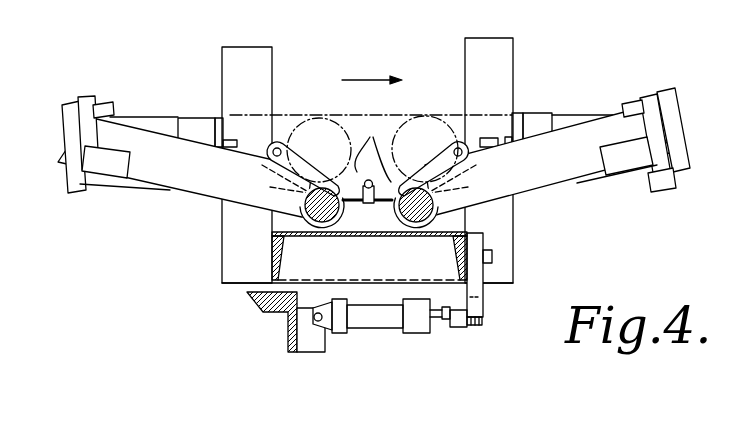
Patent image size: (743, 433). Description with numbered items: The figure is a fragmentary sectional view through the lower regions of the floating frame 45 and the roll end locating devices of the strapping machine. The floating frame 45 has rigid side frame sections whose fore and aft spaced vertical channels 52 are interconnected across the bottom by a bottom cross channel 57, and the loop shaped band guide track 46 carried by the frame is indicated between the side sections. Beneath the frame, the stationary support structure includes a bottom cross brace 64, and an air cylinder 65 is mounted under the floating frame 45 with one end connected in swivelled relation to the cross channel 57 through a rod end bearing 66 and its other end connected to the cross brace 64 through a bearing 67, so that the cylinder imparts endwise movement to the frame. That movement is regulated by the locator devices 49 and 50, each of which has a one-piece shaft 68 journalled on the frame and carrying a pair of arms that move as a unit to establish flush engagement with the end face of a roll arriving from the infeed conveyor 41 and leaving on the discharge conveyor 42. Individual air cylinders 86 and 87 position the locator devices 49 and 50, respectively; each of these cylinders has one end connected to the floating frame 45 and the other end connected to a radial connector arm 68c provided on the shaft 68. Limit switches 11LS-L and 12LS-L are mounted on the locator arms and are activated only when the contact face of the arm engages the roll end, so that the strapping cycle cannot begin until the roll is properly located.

The infeed conveyor 41 is at (286, 120).
The discharge conveyor 42 is at (453, 118).
The floating frame 45 is at (517, 235).
The band guide track 46 is at (370, 202).
The upstream locator device 49 is at (542, 192).
The downstream locator device 50 is at (206, 196).
The vertical channels 52 is at (225, 56).
The bottom cross channel 57 is at (352, 241).
The bottom cross brace 64 is at (290, 337).
The air cylinder 65 is at (390, 320).
The rod end bearing 66 is at (456, 316).
The bearing 67 is at (318, 323).
The one-piece shaft 68 is at (373, 149).
The radial connector arm 68c is at (325, 185).
The air cylinder 86 is at (542, 113).
The air cylinder 87 is at (206, 122).
The limit switch 11LS-L is at (108, 162).
The limit switch 12LS-L is at (630, 158).